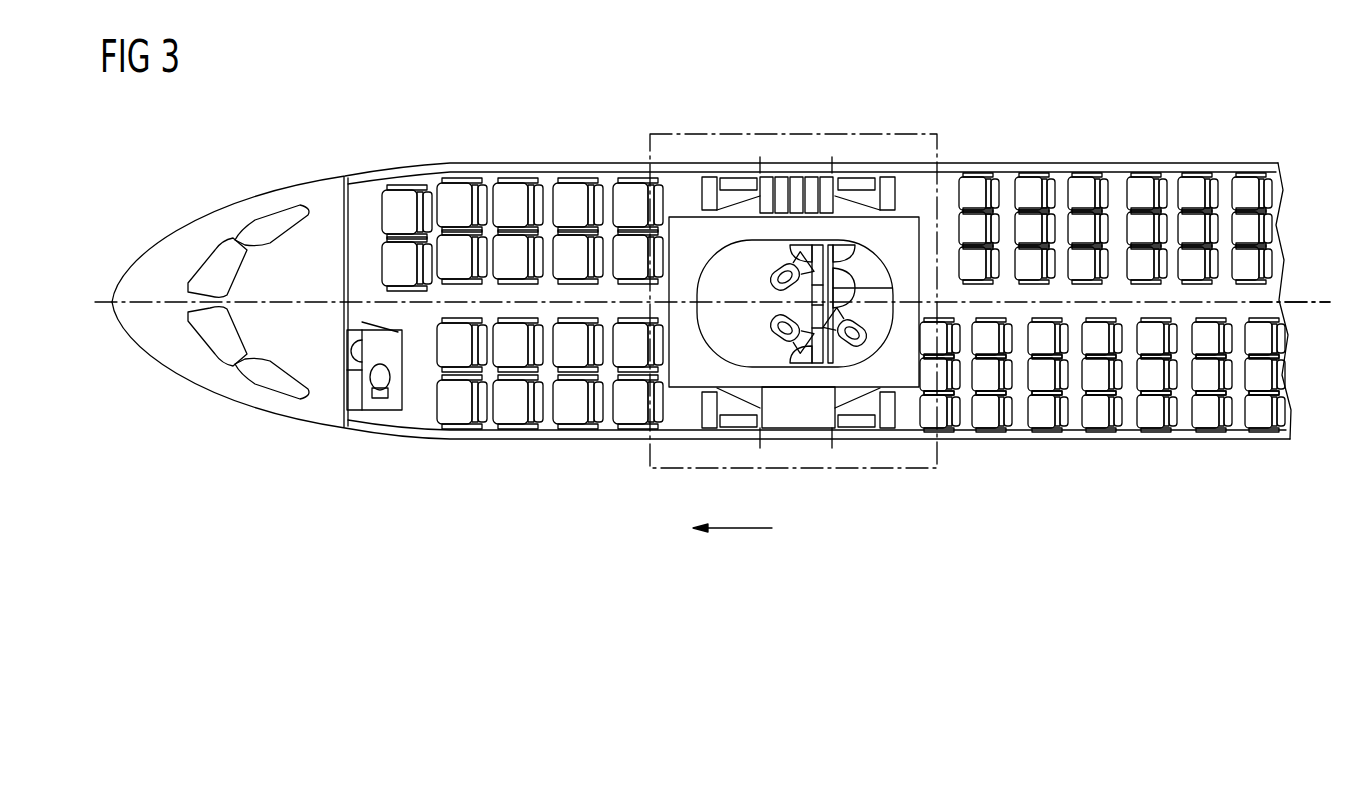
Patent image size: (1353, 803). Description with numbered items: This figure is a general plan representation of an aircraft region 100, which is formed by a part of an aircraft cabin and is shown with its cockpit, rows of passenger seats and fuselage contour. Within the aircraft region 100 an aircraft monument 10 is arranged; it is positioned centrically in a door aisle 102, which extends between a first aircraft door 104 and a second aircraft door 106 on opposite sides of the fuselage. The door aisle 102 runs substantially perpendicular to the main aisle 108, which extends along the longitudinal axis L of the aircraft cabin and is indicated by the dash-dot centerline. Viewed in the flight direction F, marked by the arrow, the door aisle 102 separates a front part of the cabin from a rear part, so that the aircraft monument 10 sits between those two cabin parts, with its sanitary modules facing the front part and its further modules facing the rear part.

The aircraft region 100 is at (962, 82).
The aircraft monument 10 is at (882, 242).
The door aisle 102 is at (850, 207).
The first aircraft door 104 is at (793, 178).
The second aircraft door 106 is at (793, 430).
The main aisle 108 is at (520, 295).
The flight direction F is at (741, 530).
The longitudinal axis L is at (1310, 293).